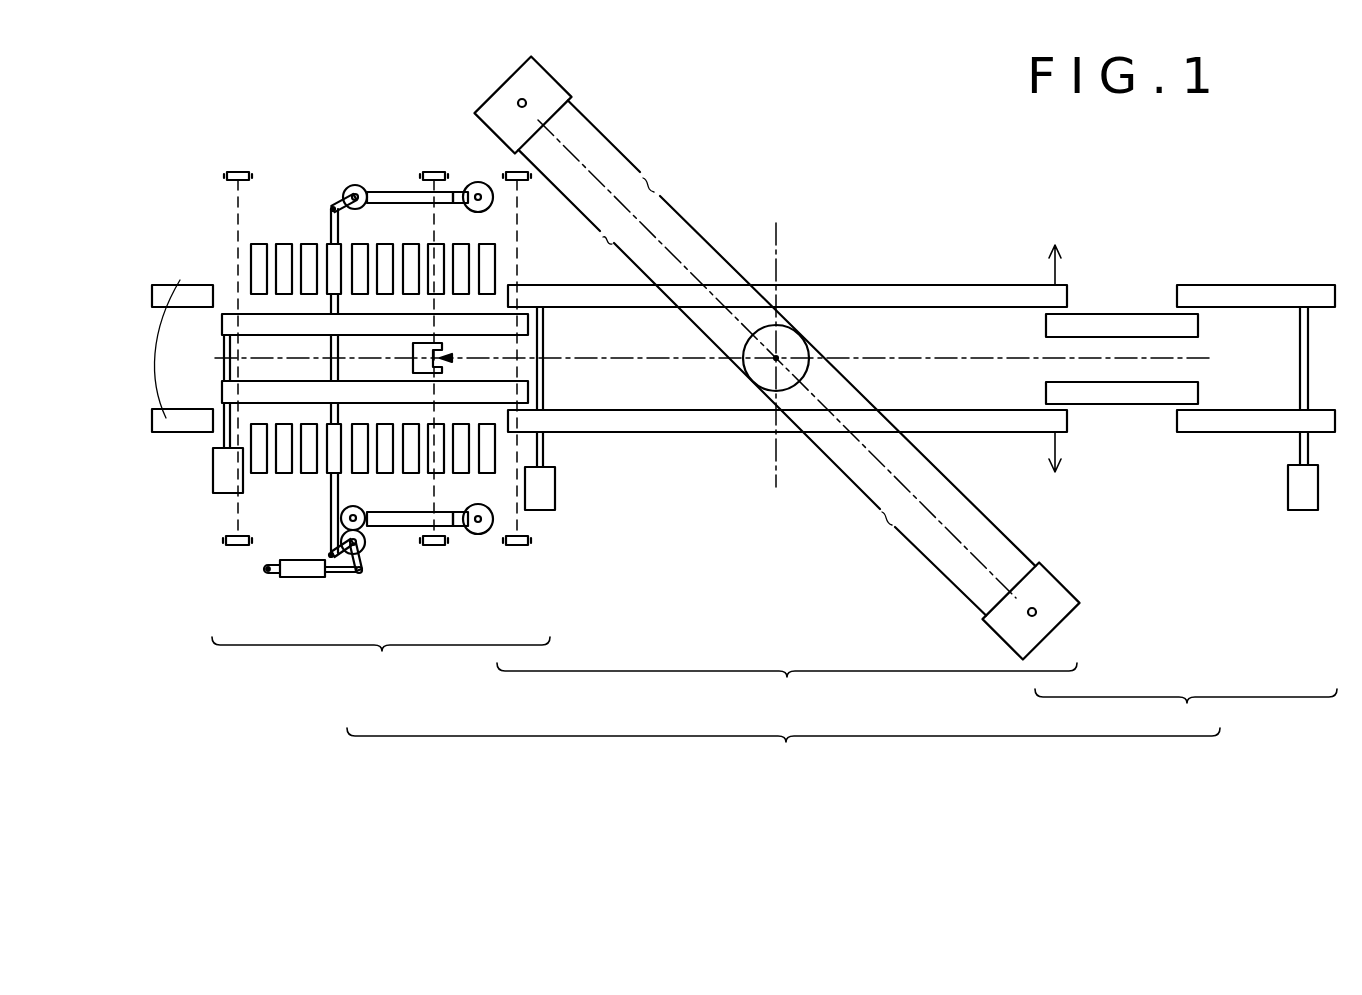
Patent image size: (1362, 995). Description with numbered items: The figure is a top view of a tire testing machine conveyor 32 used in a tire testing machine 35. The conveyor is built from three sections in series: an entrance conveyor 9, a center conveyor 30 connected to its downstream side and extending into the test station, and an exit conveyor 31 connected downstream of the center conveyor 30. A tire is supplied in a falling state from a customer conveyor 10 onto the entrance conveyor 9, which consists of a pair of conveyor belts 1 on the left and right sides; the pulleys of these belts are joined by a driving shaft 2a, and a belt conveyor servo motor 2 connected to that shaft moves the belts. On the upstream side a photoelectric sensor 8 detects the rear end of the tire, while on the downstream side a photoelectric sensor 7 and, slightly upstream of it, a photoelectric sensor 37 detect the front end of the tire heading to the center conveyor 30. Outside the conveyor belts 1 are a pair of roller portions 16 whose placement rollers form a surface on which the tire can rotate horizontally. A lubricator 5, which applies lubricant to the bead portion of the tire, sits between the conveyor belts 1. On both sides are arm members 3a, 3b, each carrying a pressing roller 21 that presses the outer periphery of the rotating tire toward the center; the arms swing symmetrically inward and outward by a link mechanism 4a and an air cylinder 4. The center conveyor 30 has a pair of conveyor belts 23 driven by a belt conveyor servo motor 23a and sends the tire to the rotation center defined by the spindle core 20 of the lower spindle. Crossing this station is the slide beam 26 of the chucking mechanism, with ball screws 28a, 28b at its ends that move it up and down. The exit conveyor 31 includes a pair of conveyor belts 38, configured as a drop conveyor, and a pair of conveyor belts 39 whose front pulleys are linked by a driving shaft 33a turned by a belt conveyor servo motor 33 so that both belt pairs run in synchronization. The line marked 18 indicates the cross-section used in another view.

The tire testing machine 35 is at (297, 123).
The customer conveyor 10 is at (194, 293).
The conveyor belts 1 is at (224, 325).
The driving shaft 2a is at (227, 362).
The belt conveyor servo motor 2 is at (213, 484).
The photoelectric sensor 8 is at (238, 546).
The photoelectric sensor 37 is at (434, 546).
The photoelectric sensor 7 is at (518, 546).
The roller portions 16 is at (312, 467).
The link mechanism 4a is at (331, 209).
The arm member 3b is at (395, 192).
The pressing roller 21 is at (478, 182).
The arm member 3a is at (395, 527).
The air cylinder 4 is at (303, 578).
The lubricator 5 is at (450, 358).
The conveyor belts 23 is at (906, 410).
The belt conveyor servo motor 23a is at (556, 491).
The spindle core 20 is at (772, 360).
The slide beam 26 is at (655, 196).
The ball screw 28a is at (527, 103).
The ball screw 28b is at (1028, 612).
The line of cross-section 18 is at (1098, 343).
The conveyor belts 38 is at (1046, 386).
The conveyor belts 39 is at (1322, 420).
The driving shaft 33a is at (1300, 358).
The belt conveyor servo motor 33 is at (1288, 490).
The entrance conveyor 9 is at (381, 661).
The center conveyor 30 is at (787, 686).
The exit conveyor 31 is at (1186, 712).
The tire testing machine conveyor 32 is at (783, 751).